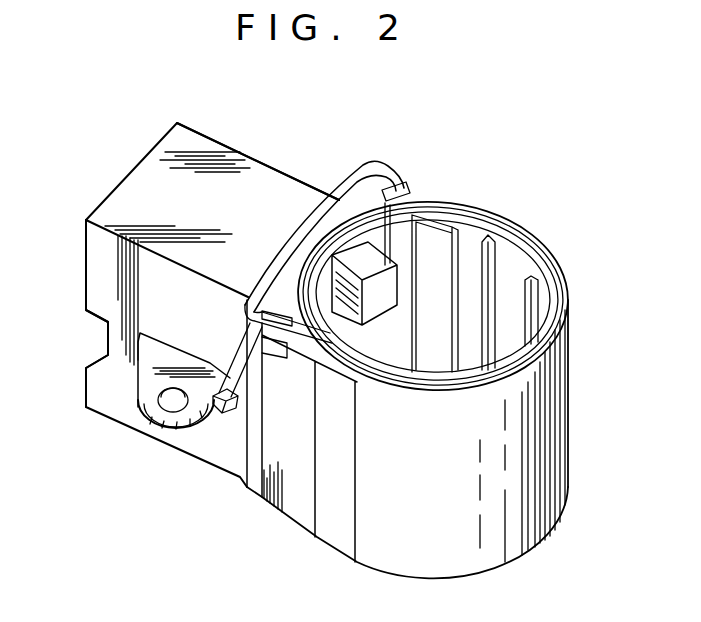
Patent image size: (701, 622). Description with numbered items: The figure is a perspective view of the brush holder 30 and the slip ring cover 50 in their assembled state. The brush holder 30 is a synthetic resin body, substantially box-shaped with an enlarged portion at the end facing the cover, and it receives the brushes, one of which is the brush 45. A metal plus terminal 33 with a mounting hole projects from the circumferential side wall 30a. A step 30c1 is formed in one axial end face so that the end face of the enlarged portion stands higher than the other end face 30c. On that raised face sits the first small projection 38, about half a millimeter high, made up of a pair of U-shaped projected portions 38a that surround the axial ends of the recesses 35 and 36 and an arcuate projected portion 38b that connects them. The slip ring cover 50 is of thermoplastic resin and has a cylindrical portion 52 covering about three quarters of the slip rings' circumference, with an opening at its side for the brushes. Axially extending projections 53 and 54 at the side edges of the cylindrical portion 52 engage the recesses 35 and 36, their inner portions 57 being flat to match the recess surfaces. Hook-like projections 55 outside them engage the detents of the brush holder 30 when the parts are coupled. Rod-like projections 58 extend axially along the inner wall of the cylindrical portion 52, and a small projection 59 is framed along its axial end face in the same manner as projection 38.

The brush holder 30 is at (117, 186).
The end face of the brush holder 30c is at (188, 152).
The circumferential side wall 30a is at (110, 305).
The step 30c1 is at (217, 277).
The plus terminal 33 is at (148, 400).
The first small projection 38 is at (373, 180).
The projected portion 38a is at (390, 190).
The arcuate projected portion 38b is at (317, 237).
The recess 36 is at (270, 298).
The recess 35 is at (400, 167).
The brush 45 is at (362, 268).
The slip ring cover 50 is at (572, 398).
The cylindrical portion 52 is at (457, 553).
The projection 53 is at (418, 200).
The projection 54 is at (290, 352).
The hook-like projection 55 is at (290, 510).
The inner portion 57 is at (405, 248).
The rod-like projection 58 is at (500, 260).
The small projection 59 is at (395, 392).